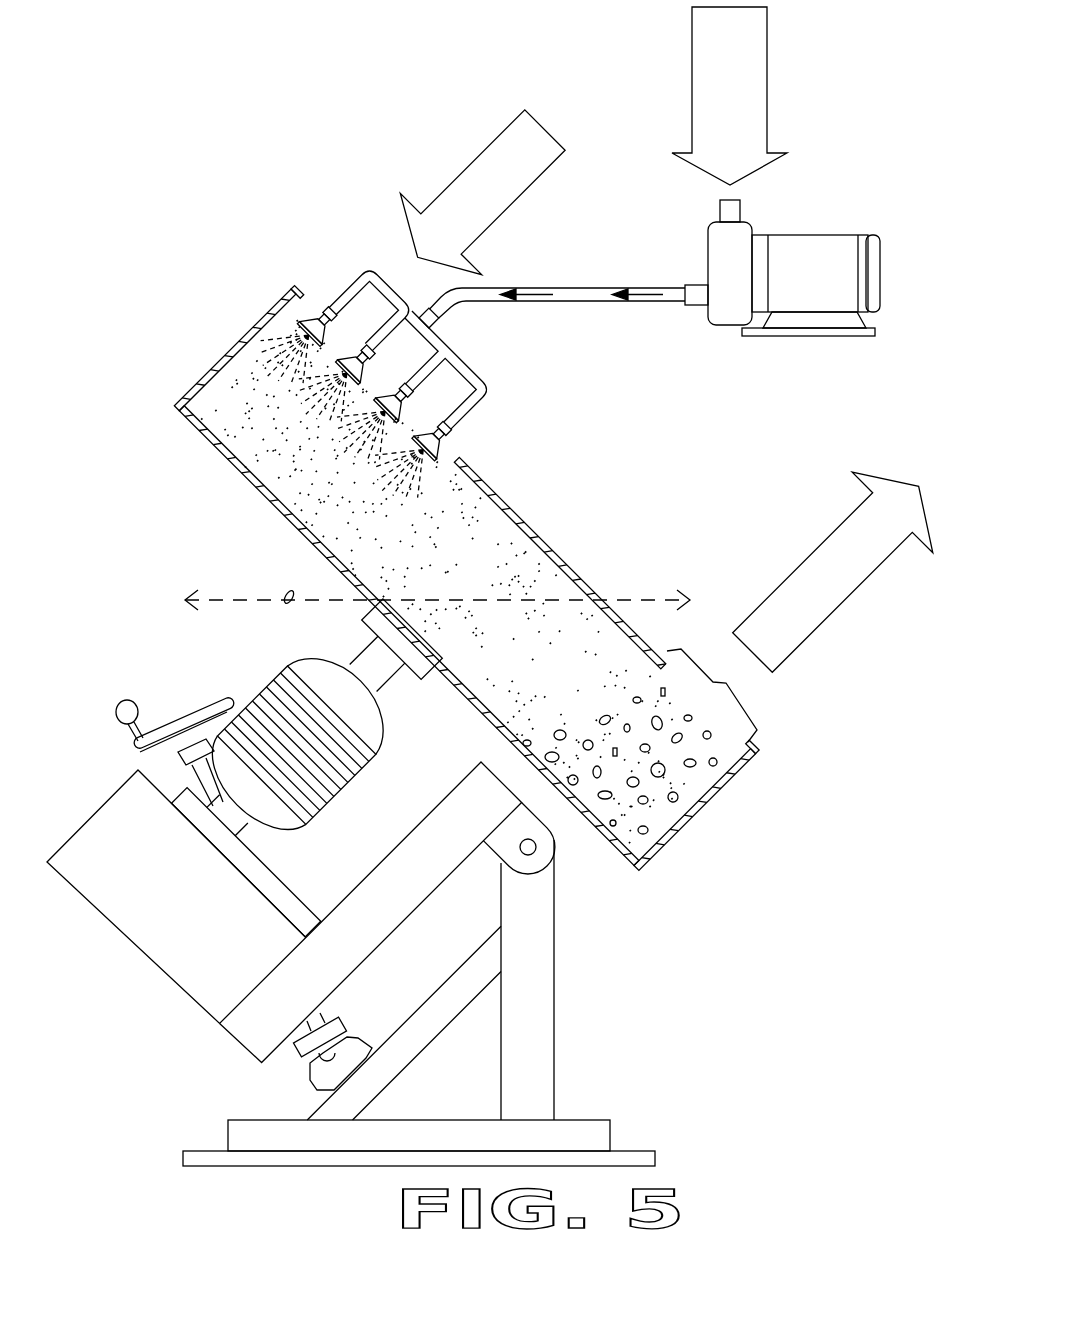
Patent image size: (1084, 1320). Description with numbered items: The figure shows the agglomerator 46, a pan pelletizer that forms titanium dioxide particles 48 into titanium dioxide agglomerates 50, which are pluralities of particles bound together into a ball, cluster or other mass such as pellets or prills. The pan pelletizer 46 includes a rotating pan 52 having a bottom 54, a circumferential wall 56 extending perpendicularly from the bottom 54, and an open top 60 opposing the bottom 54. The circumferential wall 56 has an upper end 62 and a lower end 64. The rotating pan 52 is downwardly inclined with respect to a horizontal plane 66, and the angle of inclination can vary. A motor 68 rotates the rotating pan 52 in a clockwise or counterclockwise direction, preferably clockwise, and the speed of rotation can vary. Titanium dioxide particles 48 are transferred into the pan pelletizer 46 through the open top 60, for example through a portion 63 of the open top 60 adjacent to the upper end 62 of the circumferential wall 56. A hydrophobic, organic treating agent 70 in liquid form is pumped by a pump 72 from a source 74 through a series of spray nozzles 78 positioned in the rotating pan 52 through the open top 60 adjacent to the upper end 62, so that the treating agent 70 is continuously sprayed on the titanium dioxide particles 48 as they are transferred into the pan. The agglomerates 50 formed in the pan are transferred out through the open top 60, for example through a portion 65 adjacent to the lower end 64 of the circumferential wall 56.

The agglomerator 46 is at (696, 511).
The titanium dioxide particles 48 is at (457, 180).
The titanium dioxide agglomerates 50 is at (833, 617).
The rotating pan 52 is at (460, 578).
The bottom 54 is at (318, 547).
The circumferential wall 56 is at (460, 578).
The open top 60 is at (507, 502).
The upper end 62 is at (190, 400).
The portion of the open top 63 is at (397, 360).
The lower end 64 is at (710, 793).
The portion of the open top 65 is at (725, 683).
The horizontal plane 66 is at (285, 610).
The motor 68 is at (160, 980).
The hydrophobic, organic treating agent 70 is at (647, 297).
The pump 72 is at (840, 236).
The source 74 is at (767, 82).
The spray nozzles 78 is at (305, 318).